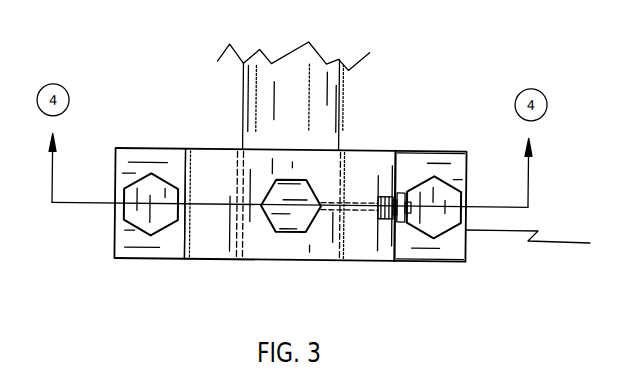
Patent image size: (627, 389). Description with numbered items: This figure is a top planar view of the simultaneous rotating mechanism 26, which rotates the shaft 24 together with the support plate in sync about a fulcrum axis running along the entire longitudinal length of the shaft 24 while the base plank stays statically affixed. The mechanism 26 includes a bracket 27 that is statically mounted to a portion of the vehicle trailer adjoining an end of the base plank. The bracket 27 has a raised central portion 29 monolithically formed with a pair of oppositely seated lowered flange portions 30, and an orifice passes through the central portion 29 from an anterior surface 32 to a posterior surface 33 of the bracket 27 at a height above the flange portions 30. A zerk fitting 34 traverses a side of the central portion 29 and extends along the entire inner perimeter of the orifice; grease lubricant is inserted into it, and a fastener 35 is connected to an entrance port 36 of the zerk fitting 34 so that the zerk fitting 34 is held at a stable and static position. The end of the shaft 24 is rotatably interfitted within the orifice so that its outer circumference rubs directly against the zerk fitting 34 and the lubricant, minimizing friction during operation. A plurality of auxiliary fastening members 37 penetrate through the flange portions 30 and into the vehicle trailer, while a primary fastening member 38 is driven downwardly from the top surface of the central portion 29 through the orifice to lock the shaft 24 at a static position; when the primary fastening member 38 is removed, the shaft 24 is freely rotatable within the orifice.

The shaft 24 is at (337, 83).
The simultaneous rotating mechanism 26 is at (451, 388).
The bracket 27 is at (185, 148).
The raised central portion 29 is at (614, 388).
The lowered flange portions 30 is at (372, 388).
The anterior surface 32 is at (412, 152).
The posterior surface 33 is at (300, 261).
The zerk fitting 34 is at (403, 262).
The fastener 35 is at (405, 190).
The entrance port 36 is at (385, 193).
The auxiliary fastening members 37 is at (135, 250).
The primary fastening member 38 is at (257, 250).